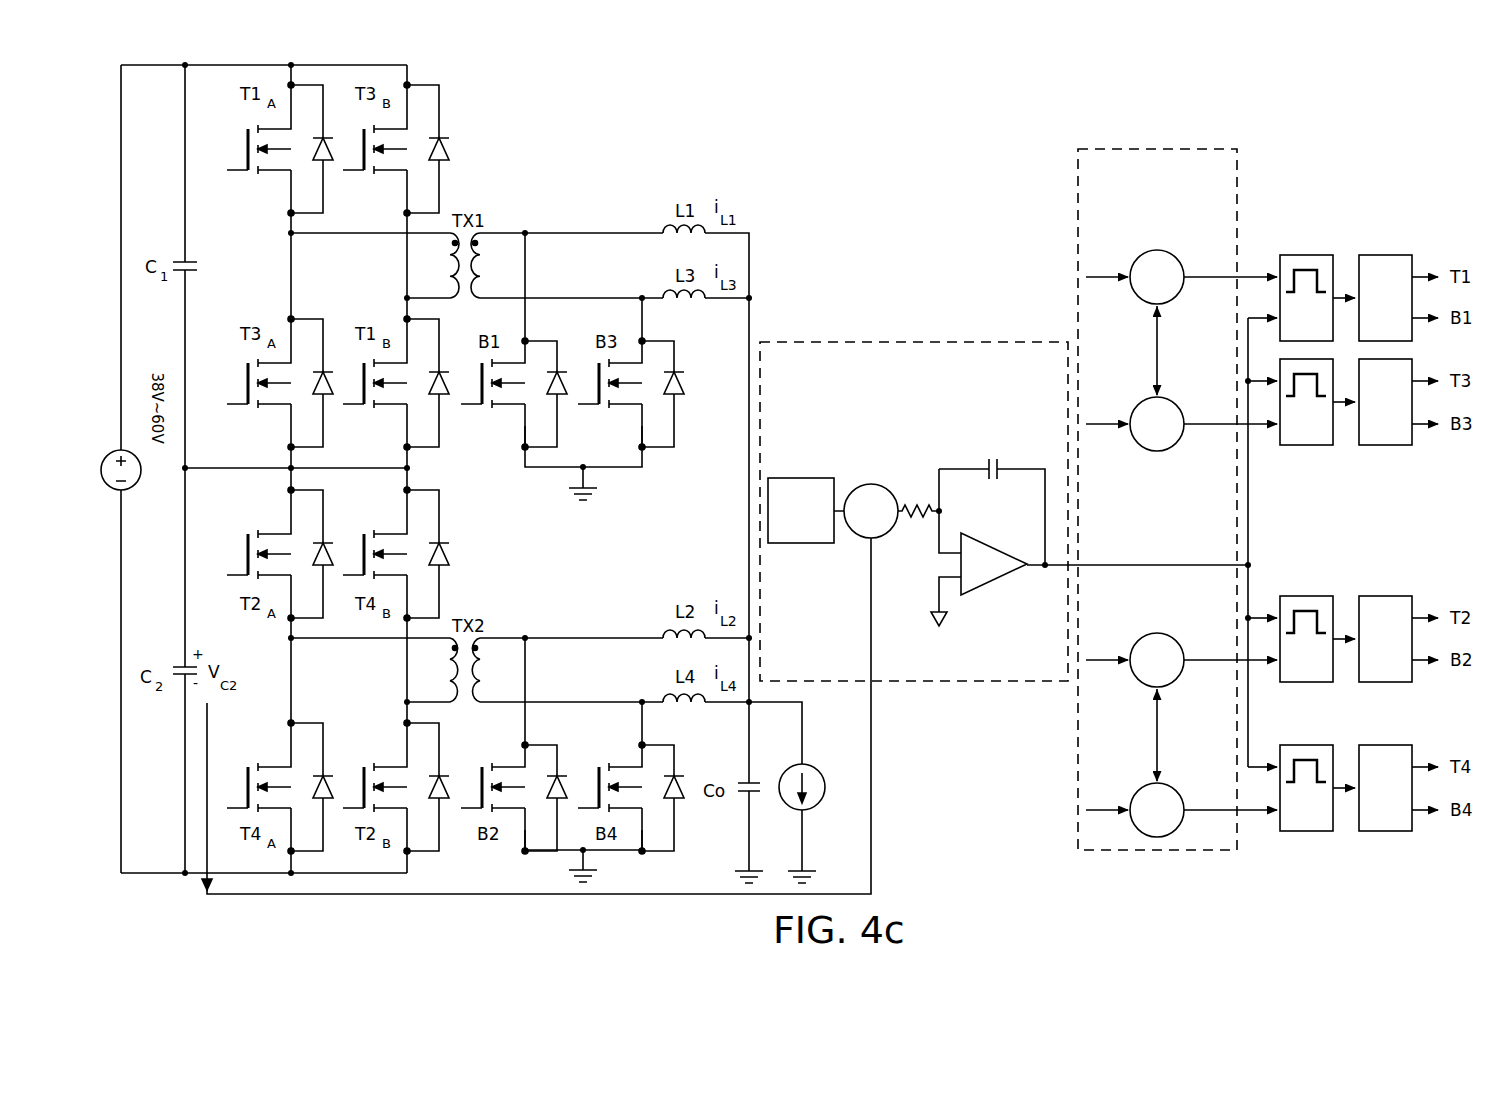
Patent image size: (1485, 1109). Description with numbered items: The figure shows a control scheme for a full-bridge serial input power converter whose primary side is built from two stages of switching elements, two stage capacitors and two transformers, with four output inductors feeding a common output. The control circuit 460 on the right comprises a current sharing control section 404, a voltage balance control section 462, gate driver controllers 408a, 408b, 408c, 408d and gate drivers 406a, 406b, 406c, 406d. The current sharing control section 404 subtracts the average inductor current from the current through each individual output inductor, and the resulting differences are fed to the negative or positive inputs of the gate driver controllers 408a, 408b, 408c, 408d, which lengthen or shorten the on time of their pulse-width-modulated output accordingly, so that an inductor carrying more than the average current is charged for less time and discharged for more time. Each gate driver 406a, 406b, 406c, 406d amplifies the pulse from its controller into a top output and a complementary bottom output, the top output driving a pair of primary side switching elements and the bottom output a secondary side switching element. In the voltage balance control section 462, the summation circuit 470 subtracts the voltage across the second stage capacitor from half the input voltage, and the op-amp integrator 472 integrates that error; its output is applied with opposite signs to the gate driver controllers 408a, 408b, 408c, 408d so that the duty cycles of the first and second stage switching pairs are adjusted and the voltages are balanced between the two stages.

The current sharing control section 404 is at (1184, 147).
The control circuit 460 is at (1332, 124).
The voltage balance control section 462 is at (963, 340).
The summation circuit 470 is at (862, 485).
The op-amp integrator 472 is at (997, 583).
The gate driver controller 408a is at (1306, 254).
The gate driver controller 408b is at (1306, 446).
The gate driver controller 408c is at (1306, 683).
The gate driver controller 408d is at (1306, 832).
The gate driver 406a is at (1384, 254).
The gate driver 406b is at (1384, 446).
The gate driver 406c is at (1384, 683).
The gate driver 406d is at (1384, 832).